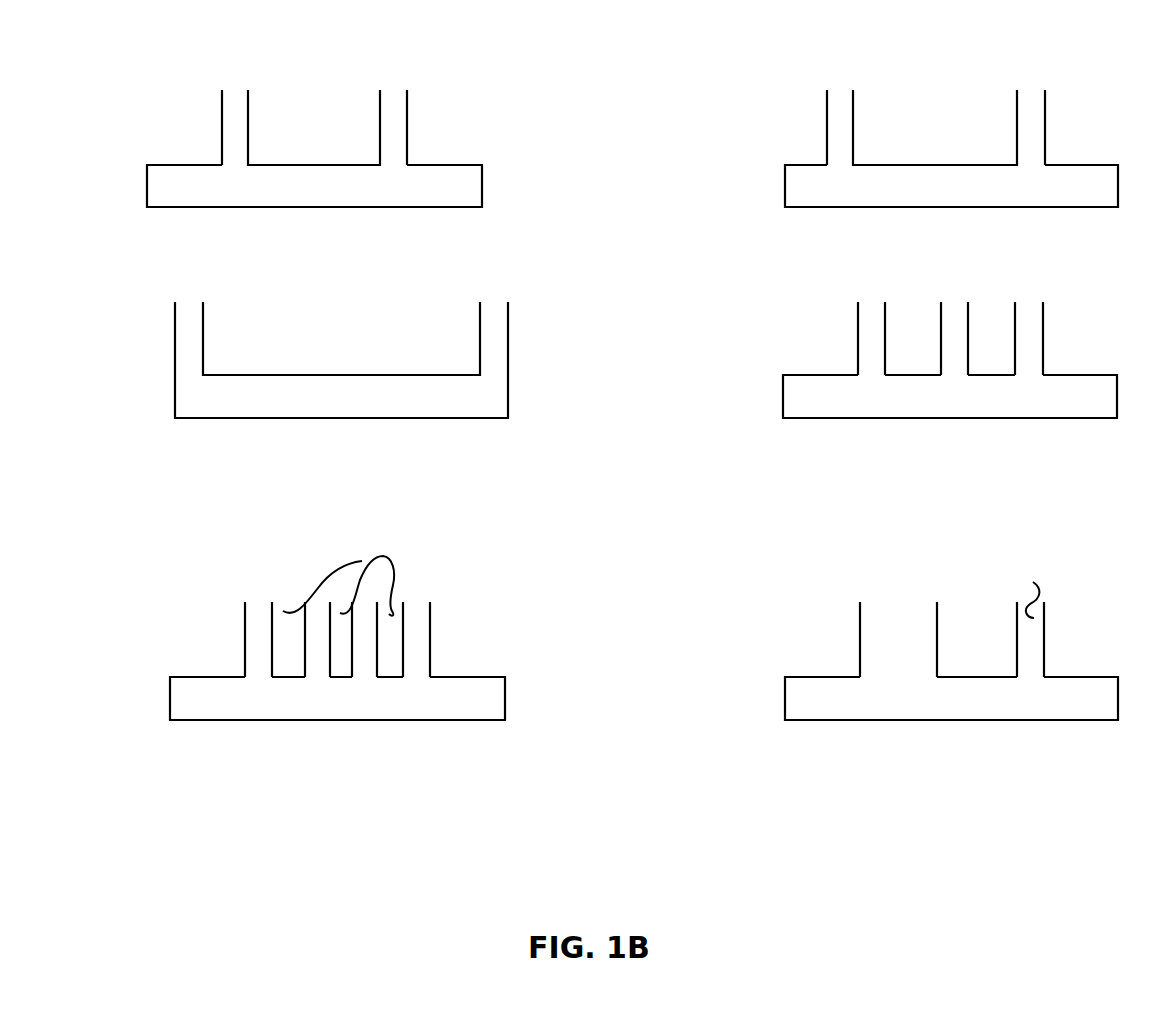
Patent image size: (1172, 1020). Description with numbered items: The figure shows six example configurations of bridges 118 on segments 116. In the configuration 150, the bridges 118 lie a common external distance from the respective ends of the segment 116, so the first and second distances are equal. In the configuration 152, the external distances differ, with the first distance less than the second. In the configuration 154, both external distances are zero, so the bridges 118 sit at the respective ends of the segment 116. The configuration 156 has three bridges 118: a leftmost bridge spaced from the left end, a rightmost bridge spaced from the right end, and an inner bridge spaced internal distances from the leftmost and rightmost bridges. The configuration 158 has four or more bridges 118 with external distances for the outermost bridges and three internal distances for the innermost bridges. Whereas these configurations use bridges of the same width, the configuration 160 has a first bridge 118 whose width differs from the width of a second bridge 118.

The segment 116 is at (291, 197).
The bridge 118 is at (291, 124).
The configuration with equal bridge distances 150 is at (160, 64).
The configuration with different bridge distances 152 is at (798, 63).
The configuration with zero bridge distance 154 is at (178, 283).
The configuration with three bridges 156 is at (833, 283).
The configuration with four or more bridges 158 is at (216, 556).
The configuration with different bridge widths 160 is at (817, 555).